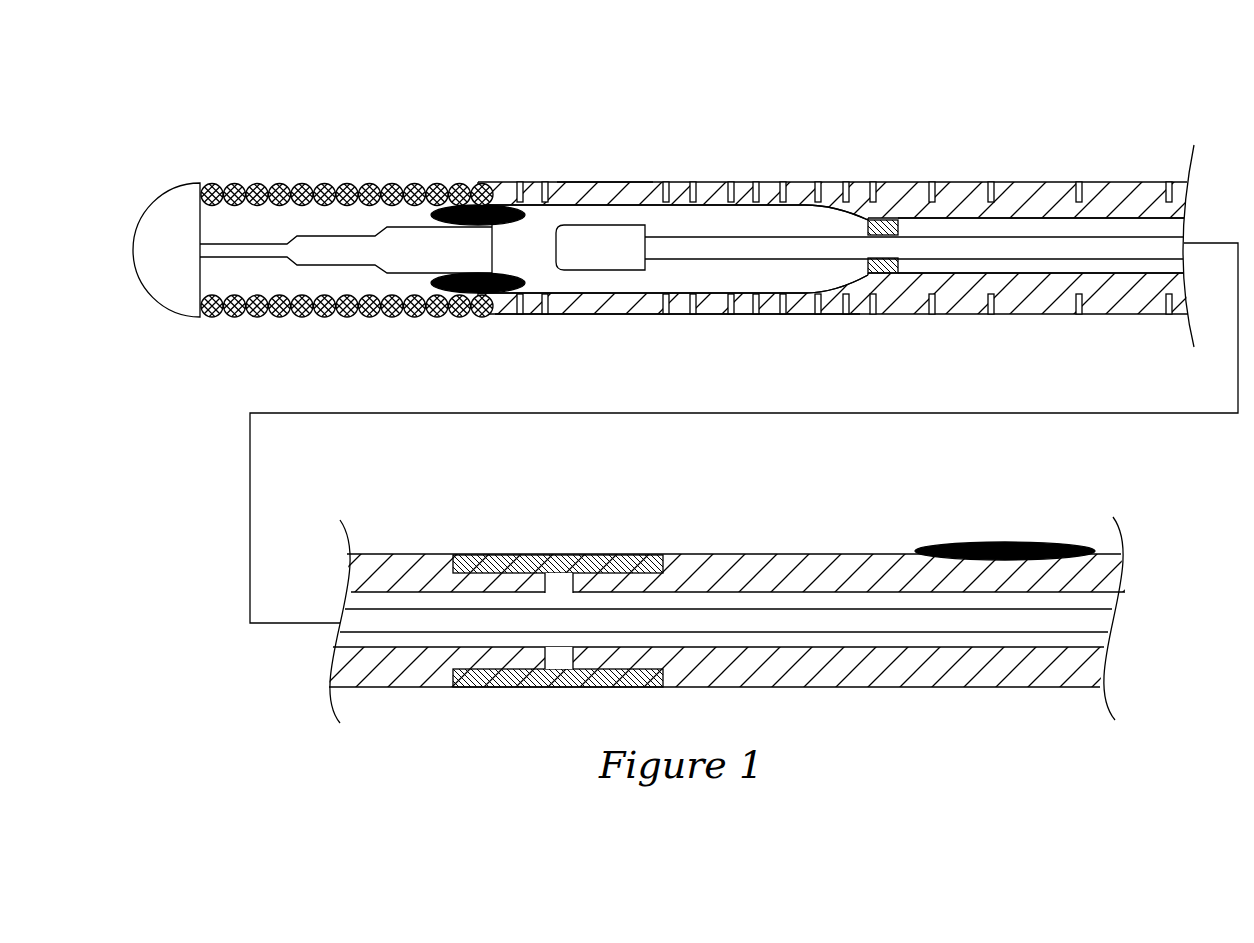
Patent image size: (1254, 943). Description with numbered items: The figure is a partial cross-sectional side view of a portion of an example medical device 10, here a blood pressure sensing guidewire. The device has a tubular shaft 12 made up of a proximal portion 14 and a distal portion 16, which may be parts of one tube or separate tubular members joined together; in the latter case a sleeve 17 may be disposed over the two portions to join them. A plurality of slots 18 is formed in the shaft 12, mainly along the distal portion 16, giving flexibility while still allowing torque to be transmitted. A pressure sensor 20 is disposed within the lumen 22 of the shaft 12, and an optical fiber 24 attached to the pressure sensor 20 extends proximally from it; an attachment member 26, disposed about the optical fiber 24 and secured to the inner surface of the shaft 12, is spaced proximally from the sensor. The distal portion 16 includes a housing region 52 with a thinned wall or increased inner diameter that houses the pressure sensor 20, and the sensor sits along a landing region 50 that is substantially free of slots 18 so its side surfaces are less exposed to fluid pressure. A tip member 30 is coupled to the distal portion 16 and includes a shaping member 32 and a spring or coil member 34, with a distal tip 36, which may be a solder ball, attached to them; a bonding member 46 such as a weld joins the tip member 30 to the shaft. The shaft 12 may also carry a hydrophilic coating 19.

The medical device 10 is at (848, 68).
The shaft 12 is at (1126, 164).
The proximal portion 14 is at (838, 553).
The distal portion 16 is at (1028, 181).
The sleeve 17 is at (555, 555).
The slots 18 is at (695, 183).
The hydrophilic coating 19 is at (1003, 543).
The pressure sensor 20 is at (587, 258).
The lumen 22 is at (771, 215).
The optical fiber 24 is at (1042, 250).
The attachment member 26 is at (883, 218).
The tip member 30 is at (275, 171).
The shaping member 32 is at (328, 250).
The spring or coil member 34 is at (347, 188).
The distal tip 36 is at (181, 200).
The bonding member 46 is at (520, 205).
The landing region 50 is at (557, 178).
The housing region 52 is at (860, 320).